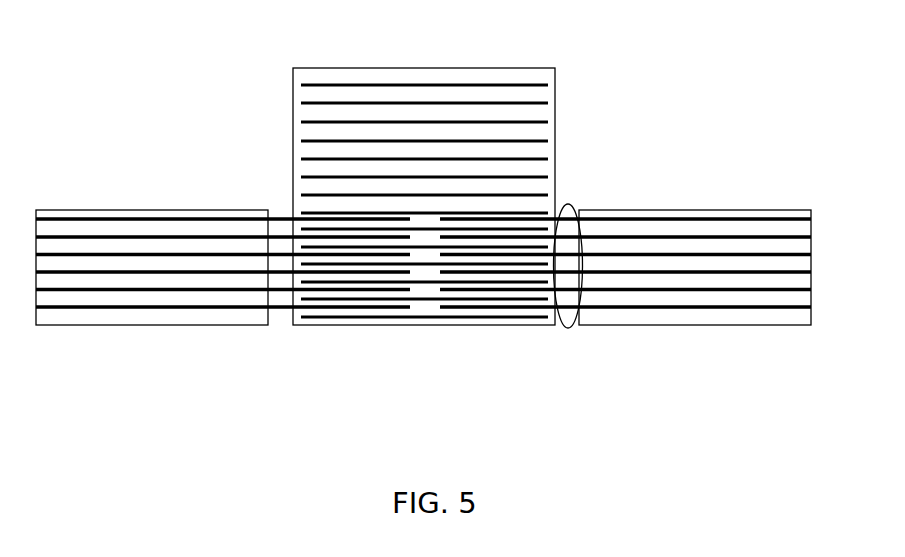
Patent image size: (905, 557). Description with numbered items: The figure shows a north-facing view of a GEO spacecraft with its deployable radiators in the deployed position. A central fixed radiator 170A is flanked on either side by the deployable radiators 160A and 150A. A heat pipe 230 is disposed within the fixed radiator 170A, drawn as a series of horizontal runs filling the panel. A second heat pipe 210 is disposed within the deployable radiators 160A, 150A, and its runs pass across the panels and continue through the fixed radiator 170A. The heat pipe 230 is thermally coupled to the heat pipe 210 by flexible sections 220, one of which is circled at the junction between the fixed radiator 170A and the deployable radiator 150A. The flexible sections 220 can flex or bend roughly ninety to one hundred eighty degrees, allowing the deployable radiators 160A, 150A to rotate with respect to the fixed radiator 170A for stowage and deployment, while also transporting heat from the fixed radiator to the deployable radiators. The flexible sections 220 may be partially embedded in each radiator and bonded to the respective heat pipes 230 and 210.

The fixed radiator 170A is at (428, 62).
The heat pipe 230 is at (336, 154).
The deployable radiator 160A is at (78, 204).
The deployable radiator 150A is at (648, 200).
The heat pipe 210 is at (729, 231).
The flexible section 220 is at (564, 318).